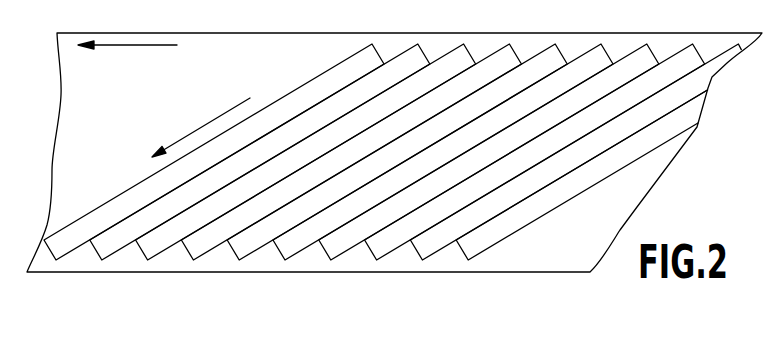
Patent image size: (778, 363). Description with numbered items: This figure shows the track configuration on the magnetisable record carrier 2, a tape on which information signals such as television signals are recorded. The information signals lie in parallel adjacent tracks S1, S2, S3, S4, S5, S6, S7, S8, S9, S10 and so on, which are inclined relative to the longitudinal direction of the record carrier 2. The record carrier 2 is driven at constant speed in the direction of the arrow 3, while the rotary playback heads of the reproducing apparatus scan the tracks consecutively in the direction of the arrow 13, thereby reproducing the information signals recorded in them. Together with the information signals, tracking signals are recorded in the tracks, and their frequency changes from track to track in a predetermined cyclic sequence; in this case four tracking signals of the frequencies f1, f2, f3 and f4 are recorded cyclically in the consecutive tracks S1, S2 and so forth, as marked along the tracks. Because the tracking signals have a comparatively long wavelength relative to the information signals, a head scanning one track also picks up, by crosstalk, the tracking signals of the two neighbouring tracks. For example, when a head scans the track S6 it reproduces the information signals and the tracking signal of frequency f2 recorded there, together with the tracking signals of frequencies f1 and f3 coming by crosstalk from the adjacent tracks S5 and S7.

The record carrier 2 is at (236, 44).
The arrow 3 is at (130, 44).
The arrow 13 is at (210, 121).
The track S1 is at (214, 152).
The track S2 is at (260, 152).
The track S3 is at (306, 152).
The track S4 is at (351, 152).
The track S5 is at (397, 152).
The track S6 is at (443, 152).
The track S7 is at (489, 152).
The track S8 is at (535, 152).
The track S9 is at (575, 152).
The track S10 is at (581, 175).
The tracking signal frequency f1 is at (406, 146).
The tracking signal frequency f2 is at (451, 147).
The tracking signal frequency f3 is at (405, 147).
The tracking signal frequency f4 is at (452, 146).